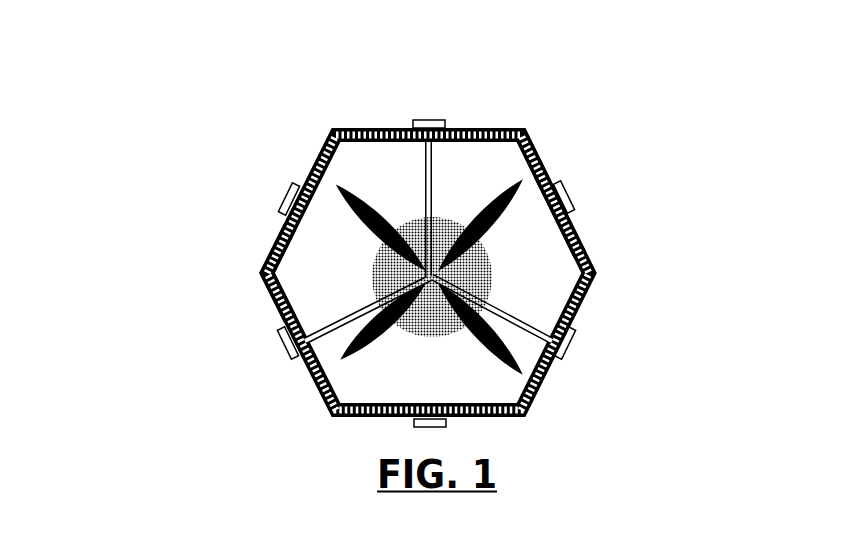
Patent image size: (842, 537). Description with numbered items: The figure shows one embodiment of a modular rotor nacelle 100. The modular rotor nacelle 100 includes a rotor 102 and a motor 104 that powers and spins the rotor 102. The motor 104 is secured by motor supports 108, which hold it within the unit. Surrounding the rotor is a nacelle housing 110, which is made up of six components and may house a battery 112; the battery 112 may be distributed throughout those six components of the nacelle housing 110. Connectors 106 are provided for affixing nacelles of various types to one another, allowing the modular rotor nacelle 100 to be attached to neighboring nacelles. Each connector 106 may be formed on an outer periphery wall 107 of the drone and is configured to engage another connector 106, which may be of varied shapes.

The modular rotor nacelle 100 is at (165, 128).
The rotor 102 is at (337, 135).
The motor 104 is at (272, 300).
The connectors 106 is at (418, 120).
The outer periphery wall 107 is at (380, 128).
The motor support 108 is at (446, 129).
The nacelle housing 110 is at (540, 143).
The battery 112 is at (568, 222).